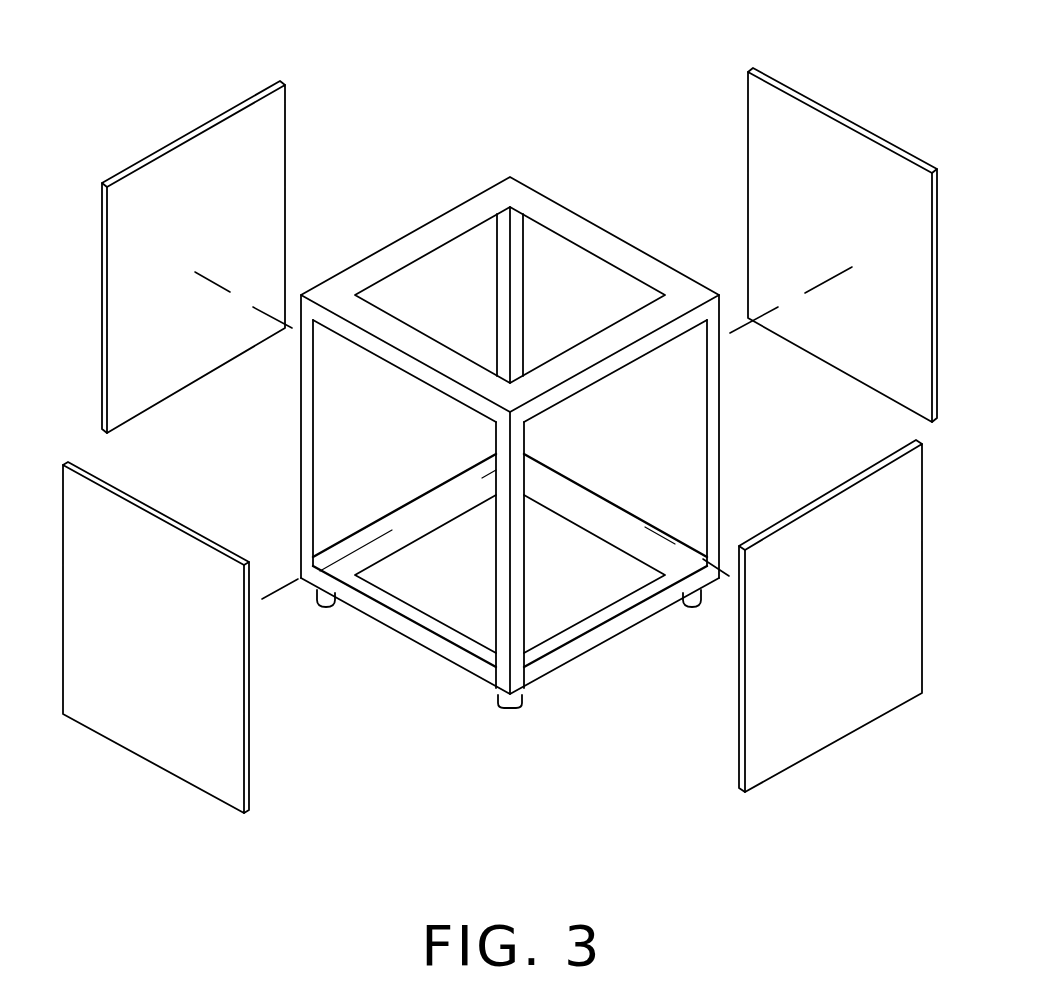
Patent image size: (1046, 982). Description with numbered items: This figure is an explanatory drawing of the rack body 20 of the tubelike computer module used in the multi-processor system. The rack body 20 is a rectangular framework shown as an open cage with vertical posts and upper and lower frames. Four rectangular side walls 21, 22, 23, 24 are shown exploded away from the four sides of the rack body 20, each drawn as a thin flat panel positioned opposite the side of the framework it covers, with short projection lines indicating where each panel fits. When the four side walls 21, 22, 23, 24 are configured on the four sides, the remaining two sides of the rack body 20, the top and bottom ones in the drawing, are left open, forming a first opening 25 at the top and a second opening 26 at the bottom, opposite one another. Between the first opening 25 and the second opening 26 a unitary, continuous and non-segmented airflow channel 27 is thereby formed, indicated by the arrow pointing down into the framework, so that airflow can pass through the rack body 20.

The rack body 20 is at (510, 456).
The rectangular side wall 21 is at (843, 730).
The rectangular side wall 22 is at (867, 147).
The rectangular side wall 23 is at (218, 137).
The rectangular side wall 24 is at (195, 772).
The first opening 25 is at (568, 258).
The second opening 26 is at (443, 618).
The airflow channel 27 is at (469, 270).